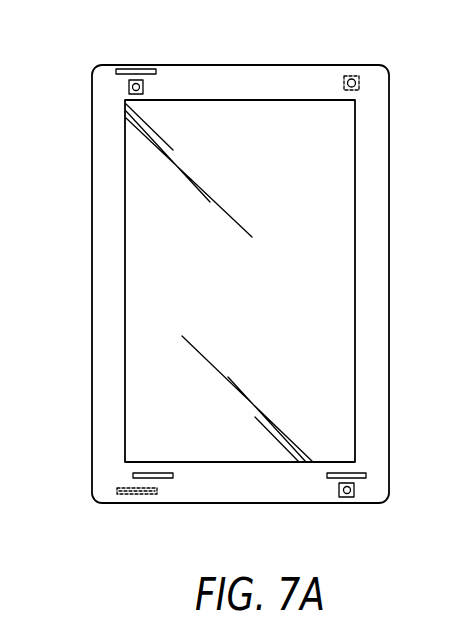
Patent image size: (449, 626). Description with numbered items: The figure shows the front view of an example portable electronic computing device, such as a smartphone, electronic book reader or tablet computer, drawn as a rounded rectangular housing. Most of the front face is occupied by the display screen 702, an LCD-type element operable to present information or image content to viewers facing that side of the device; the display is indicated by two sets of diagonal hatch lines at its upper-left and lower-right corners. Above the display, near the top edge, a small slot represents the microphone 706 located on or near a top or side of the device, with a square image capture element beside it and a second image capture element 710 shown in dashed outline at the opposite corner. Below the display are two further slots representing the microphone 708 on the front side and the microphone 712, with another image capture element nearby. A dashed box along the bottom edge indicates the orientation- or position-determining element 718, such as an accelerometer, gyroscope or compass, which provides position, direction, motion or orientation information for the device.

The display screen 702 is at (125, 170).
The microphone 706 is at (156, 72).
The microphone 708 is at (366, 476).
The image capture element 710 is at (351, 74).
The microphone 712 is at (133, 476).
The orientation- or position-determining element 718 is at (137, 495).